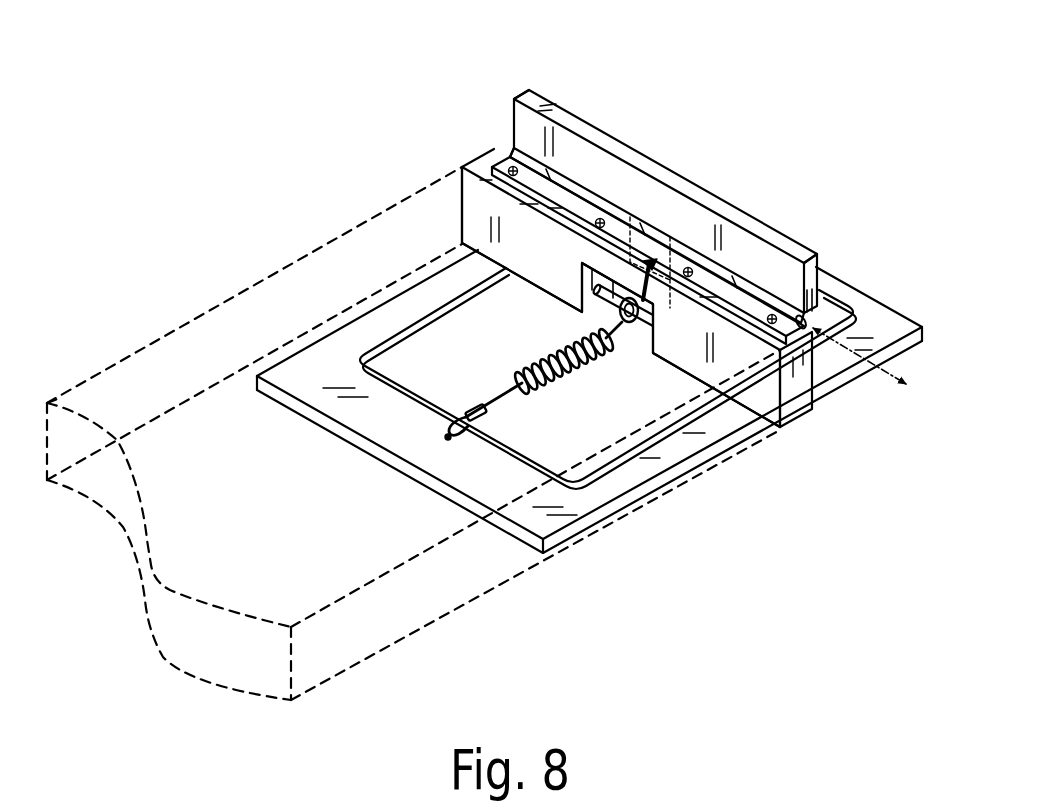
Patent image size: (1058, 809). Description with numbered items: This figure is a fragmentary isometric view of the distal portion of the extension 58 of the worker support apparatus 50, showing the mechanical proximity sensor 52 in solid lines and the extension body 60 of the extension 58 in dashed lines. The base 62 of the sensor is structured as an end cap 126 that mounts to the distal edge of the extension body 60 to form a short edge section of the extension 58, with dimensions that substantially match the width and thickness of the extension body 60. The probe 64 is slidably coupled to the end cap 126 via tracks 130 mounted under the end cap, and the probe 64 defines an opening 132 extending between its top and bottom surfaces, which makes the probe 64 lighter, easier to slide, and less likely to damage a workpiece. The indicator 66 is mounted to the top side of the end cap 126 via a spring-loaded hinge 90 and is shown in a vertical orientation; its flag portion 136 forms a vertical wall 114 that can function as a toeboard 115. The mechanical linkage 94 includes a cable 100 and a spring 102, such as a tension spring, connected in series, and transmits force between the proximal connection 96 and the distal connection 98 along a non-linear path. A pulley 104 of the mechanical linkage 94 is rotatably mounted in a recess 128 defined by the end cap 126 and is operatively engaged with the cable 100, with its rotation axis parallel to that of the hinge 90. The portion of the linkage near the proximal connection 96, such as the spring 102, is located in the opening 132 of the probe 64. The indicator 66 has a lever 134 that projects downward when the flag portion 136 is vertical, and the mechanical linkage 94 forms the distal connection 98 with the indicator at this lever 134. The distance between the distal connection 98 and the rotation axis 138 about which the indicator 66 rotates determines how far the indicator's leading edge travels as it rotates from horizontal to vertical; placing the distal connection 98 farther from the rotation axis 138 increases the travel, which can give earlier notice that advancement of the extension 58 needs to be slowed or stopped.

The worker support apparatus 50 is at (252, 178).
The mechanical proximity sensor 52 is at (567, 78).
The extension 58 is at (284, 257).
The extension body 60 is at (195, 313).
The base 62 is at (490, 152).
The probe 64 is at (372, 450).
The indicator 66 is at (647, 159).
The spring-loaded hinge 90 is at (556, 183).
The mechanical linkage 94 is at (534, 361).
The proximal connection 96 is at (449, 438).
The distal connection 98 is at (655, 319).
The cable 100 is at (627, 328).
The spring 102 is at (578, 374).
The pulley 104 is at (620, 311).
The vertical wall 114 is at (745, 246).
The toeboard 115 is at (535, 132).
The end cap 126 is at (482, 165).
The recess 128 is at (592, 289).
The tracks 130 is at (464, 249).
The opening 132 is at (440, 318).
The lever 134 is at (672, 258).
The flag portion 136 is at (810, 292).
The rotation axis 138 is at (898, 378).